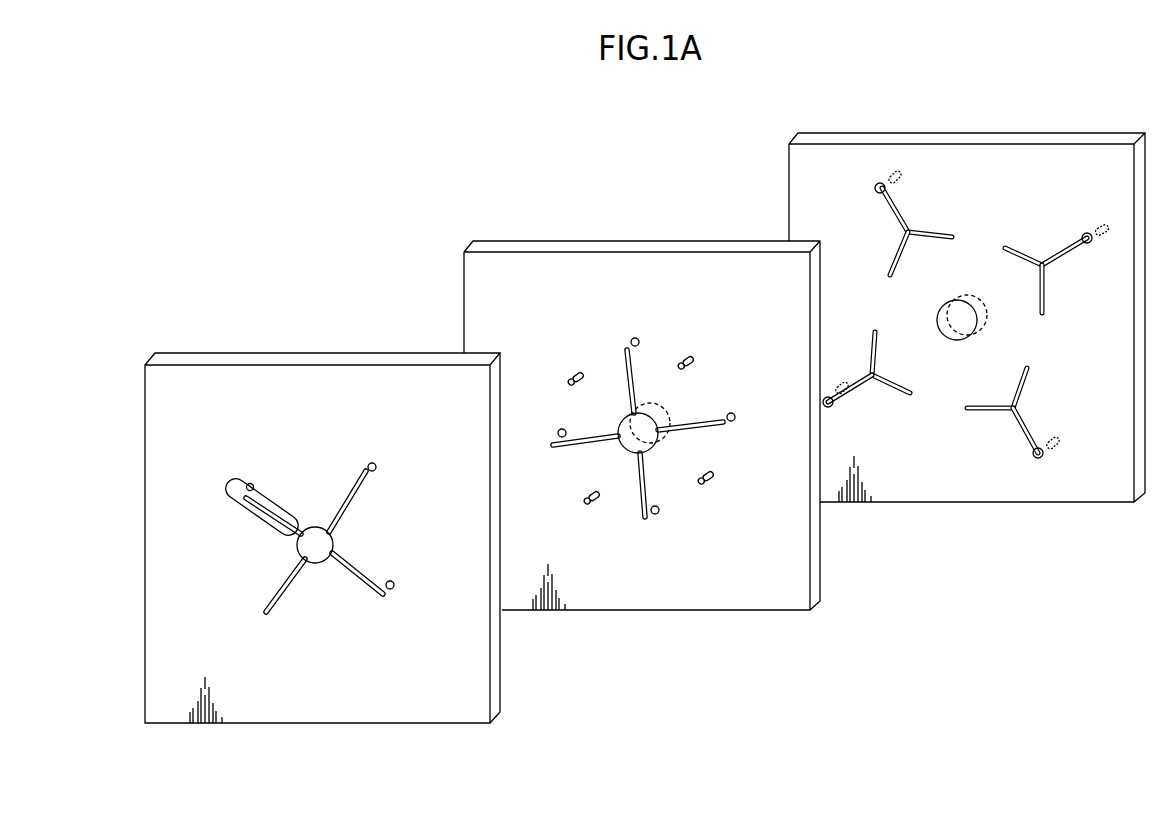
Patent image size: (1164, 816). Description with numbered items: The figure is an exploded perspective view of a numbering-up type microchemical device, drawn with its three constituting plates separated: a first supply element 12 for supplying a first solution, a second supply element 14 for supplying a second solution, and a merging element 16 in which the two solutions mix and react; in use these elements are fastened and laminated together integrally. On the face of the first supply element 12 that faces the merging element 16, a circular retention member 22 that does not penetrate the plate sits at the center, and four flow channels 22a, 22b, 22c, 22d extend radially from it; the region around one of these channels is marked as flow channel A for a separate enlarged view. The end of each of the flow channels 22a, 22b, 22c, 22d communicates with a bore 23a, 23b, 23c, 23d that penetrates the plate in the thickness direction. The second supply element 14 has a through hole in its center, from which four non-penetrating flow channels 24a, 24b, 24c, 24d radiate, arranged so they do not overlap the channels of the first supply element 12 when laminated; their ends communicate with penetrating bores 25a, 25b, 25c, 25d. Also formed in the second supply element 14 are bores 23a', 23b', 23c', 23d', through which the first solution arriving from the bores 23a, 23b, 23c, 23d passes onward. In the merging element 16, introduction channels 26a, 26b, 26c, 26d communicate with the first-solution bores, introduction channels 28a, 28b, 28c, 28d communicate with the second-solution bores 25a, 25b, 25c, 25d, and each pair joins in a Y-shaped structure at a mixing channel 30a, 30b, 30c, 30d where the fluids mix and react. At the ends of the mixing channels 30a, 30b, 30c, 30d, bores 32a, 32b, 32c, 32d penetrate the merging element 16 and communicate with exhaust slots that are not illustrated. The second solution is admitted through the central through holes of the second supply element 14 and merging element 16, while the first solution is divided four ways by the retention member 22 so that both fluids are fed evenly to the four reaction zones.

The first supply element 12 is at (220, 352).
The second supply element 14 is at (565, 240).
The merging element 16 is at (846, 132).
The flow channel A is at (250, 483).
The retention member 22 is at (318, 555).
The flow channel 22a is at (272, 503).
The flow channel 22b is at (275, 595).
The flow channel 22c is at (367, 590).
The flow channel 22d is at (356, 498).
The bore 23a is at (252, 486).
The bore 23b is at (270, 643).
The bore 23c is at (415, 611).
The bore 23d is at (351, 443).
The bore 23a' is at (557, 357).
The bore 23b' is at (563, 518).
The bore 23c' is at (735, 493).
The bore 23d' is at (701, 336).
The flow channel 24a is at (626, 378).
The flow channel 24b is at (576, 447).
The flow channel 24c is at (639, 500).
The flow channel 24d is at (695, 424).
The bore 25a is at (636, 338).
The bore 25b is at (558, 436).
The bore 25c is at (657, 516).
The bore 25d is at (735, 422).
The introduction channel 26a is at (903, 258).
The introduction channel 26b is at (898, 394).
The introduction channel 26c is at (1028, 380).
The introduction channel 26d is at (1020, 254).
The introduction channel 28a is at (928, 232).
The introduction channel 28b is at (878, 348).
The introduction channel 28c is at (982, 414).
The introduction channel 28d is at (1048, 296).
The mixing channel 30a is at (901, 213).
The mixing channel 30b is at (860, 390).
The mixing channel 30c is at (1020, 432).
The mixing channel 30d is at (1066, 258).
The bore 32a is at (893, 170).
The bore 32b is at (838, 386).
The bore 32c is at (1048, 452).
The bore 32d is at (1100, 222).